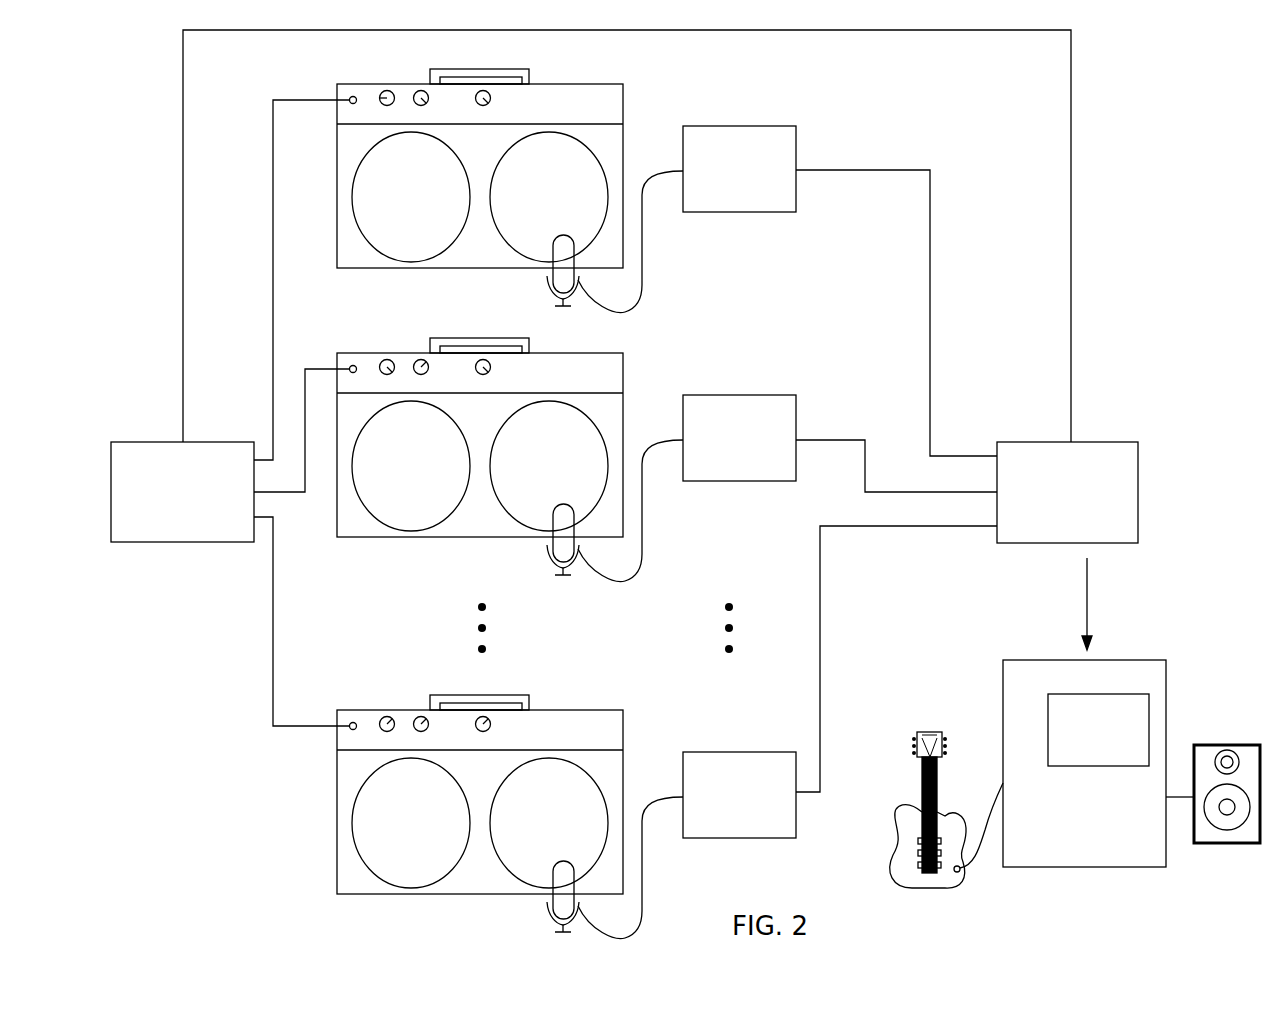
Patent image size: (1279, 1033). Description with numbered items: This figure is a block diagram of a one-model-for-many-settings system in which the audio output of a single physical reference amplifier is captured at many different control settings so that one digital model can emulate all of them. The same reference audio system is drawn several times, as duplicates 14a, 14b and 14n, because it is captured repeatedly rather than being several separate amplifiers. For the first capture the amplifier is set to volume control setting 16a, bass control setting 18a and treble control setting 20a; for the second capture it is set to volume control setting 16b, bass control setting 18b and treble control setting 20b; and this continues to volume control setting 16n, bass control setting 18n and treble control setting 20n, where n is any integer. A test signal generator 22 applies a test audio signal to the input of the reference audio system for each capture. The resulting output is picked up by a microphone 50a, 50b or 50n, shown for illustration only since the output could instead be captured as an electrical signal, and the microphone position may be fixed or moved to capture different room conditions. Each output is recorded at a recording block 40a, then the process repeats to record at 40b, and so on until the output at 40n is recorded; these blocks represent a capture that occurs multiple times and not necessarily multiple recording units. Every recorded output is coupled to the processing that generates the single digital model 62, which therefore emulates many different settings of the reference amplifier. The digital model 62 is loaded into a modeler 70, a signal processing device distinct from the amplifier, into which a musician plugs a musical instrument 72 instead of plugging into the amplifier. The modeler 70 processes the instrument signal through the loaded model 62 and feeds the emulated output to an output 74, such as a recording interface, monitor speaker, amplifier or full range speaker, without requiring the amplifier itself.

The reference audio system (first capture) 14a is at (374, 268).
The reference audio system (second capture) 14b is at (469, 446).
The reference audio system (nth capture) 14n is at (469, 803).
The volume control setting 16a is at (394, 93).
The volume control setting 16b is at (414, 340).
The volume control setting 16n is at (414, 697).
The bass control setting 18a is at (428, 93).
The bass control setting 18b is at (447, 343).
The bass control setting 18n is at (447, 700).
The treble control setting 20a is at (490, 95).
The treble control setting 20b is at (511, 343).
The treble control setting 20n is at (511, 700).
The test signal generator 22 is at (173, 543).
The recording block 40a is at (742, 212).
The recording block 40b is at (742, 481).
The recording block 40n is at (742, 838).
The microphone 50a is at (579, 278).
The microphone 50b is at (590, 518).
The microphone 50n is at (589, 873).
The digital model 62 is at (1031, 543).
The modeler 70 is at (1084, 868).
The musical instrument 72 is at (907, 888).
The output 74 is at (1206, 745).